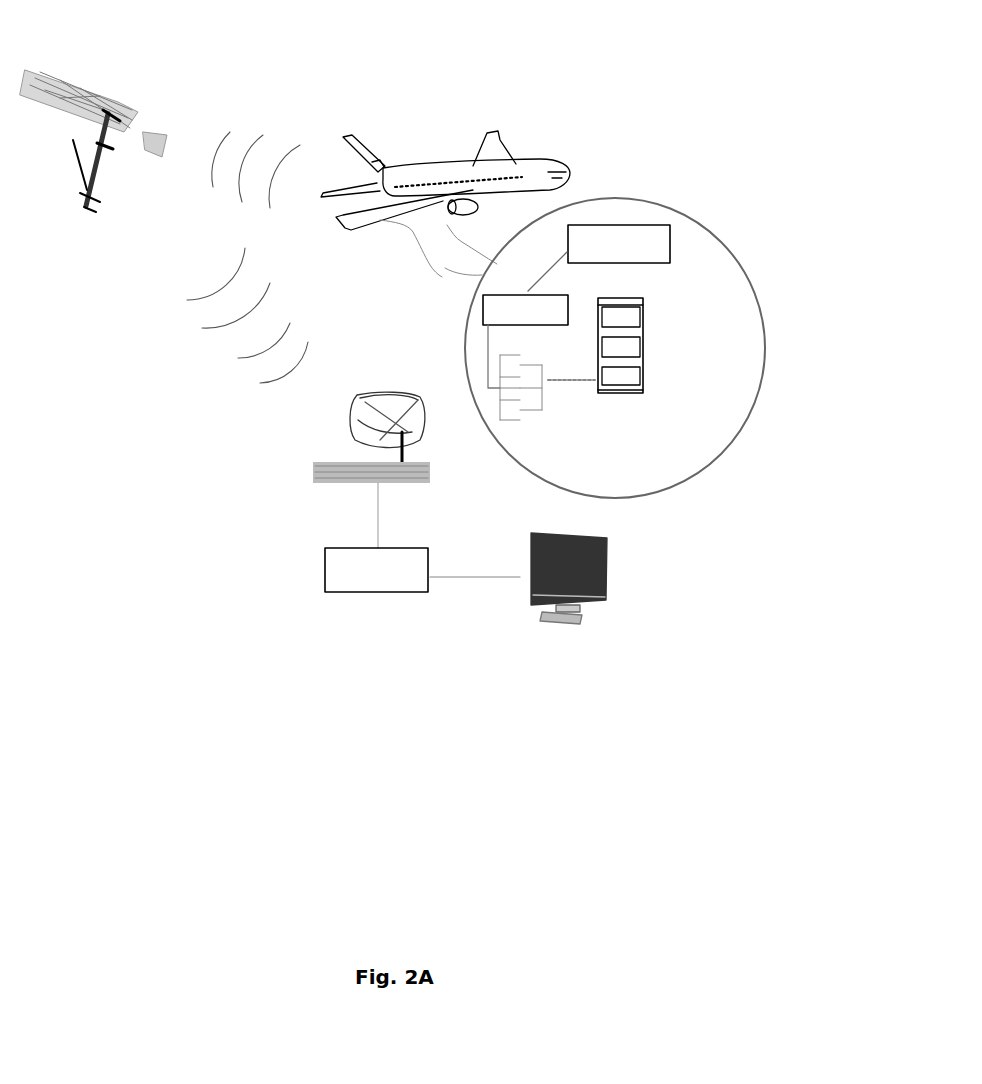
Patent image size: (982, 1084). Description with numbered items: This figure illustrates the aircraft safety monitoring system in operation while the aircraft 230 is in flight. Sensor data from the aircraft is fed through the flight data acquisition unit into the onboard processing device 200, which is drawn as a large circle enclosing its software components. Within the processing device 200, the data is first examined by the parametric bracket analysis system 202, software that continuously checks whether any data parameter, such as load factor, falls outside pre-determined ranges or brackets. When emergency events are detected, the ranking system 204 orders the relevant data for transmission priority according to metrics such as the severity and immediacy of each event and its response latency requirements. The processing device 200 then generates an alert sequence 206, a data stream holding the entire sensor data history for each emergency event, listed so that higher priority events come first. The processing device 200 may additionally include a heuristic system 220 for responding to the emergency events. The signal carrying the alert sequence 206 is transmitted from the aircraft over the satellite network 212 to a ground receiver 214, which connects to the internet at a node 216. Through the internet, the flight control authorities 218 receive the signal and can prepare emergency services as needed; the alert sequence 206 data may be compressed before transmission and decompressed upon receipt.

The processing device 200 is at (735, 242).
The parametric bracket analysis system 202 is at (530, 418).
The ranking system 204 is at (668, 385).
The alert sequence 206 is at (527, 293).
The satellite network 212 is at (107, 85).
The ground receiver 214 is at (300, 470).
The node 216 is at (377, 600).
The flight control authorities 218 is at (577, 637).
The heuristic system 220 is at (620, 225).
The aircraft 230 is at (508, 115).